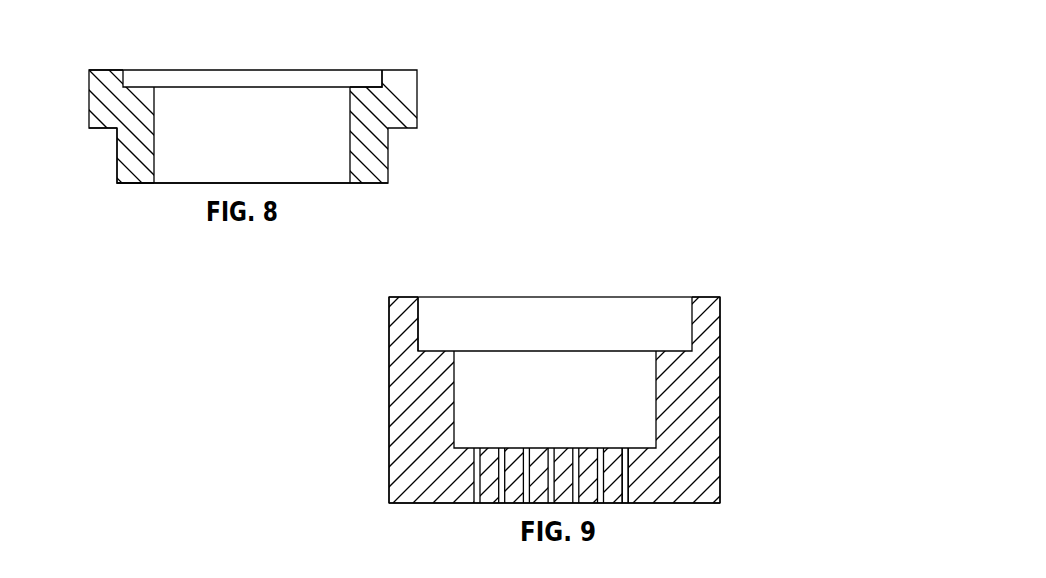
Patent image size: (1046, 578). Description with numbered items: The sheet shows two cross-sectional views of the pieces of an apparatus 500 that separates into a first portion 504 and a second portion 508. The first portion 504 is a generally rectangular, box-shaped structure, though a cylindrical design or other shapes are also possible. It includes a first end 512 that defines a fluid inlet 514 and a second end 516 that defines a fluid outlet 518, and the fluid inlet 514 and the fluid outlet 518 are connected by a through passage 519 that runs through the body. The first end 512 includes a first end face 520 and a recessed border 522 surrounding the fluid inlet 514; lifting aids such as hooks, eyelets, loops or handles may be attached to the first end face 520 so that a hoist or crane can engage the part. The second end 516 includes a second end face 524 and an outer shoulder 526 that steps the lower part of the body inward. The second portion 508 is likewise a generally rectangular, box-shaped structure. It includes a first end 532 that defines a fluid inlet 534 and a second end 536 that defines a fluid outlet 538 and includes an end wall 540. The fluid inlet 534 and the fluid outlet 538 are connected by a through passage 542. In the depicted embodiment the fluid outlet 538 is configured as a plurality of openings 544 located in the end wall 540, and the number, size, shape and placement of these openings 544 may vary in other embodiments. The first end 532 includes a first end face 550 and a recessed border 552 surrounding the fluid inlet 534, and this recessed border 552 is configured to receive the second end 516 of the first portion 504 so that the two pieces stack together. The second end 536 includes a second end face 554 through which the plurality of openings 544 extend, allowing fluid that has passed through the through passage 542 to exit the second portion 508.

In FIG. 9, the fluid handling system 500 is at (101, 577).
In FIG. 8, the first portion 504 is at (79, 189).
In FIG. 9, the second portion 508 is at (745, 249).
In FIG. 8, the first end 512 is at (144, 34).
In FIG. 8, the fluid inlet 514 is at (256, 58).
In FIG. 8, the second end 516 is at (190, 214).
In FIG. 8, the fluid outlet 518 is at (309, 193).
In FIG. 8, the through passage 519 is at (265, 147).
In FIG. 8, the first end face 520 is at (100, 69).
In FIG. 8, the recessed border 522 is at (363, 85).
In FIG. 8, the second end face 524 is at (137, 185).
In FIG. 8, the outer shoulder 526 is at (98, 128).
In FIG. 9, the first end 532 is at (644, 269).
In FIG. 9, the fluid inlet 534 is at (574, 306).
In FIG. 9, the second end 536 is at (361, 525).
In FIG. 9, the fluid outlet 538 is at (628, 518).
In FIG. 9, the end wall 540 is at (612, 447).
In FIG. 9, the through passage 542 is at (568, 407).
In FIG. 9, the openings 544 is at (522, 511).
In FIG. 9, the first end face 550 is at (398, 297).
In FIG. 9, the recessed border 552 is at (433, 351).
In FIG. 9, the second end face 554 is at (682, 505).